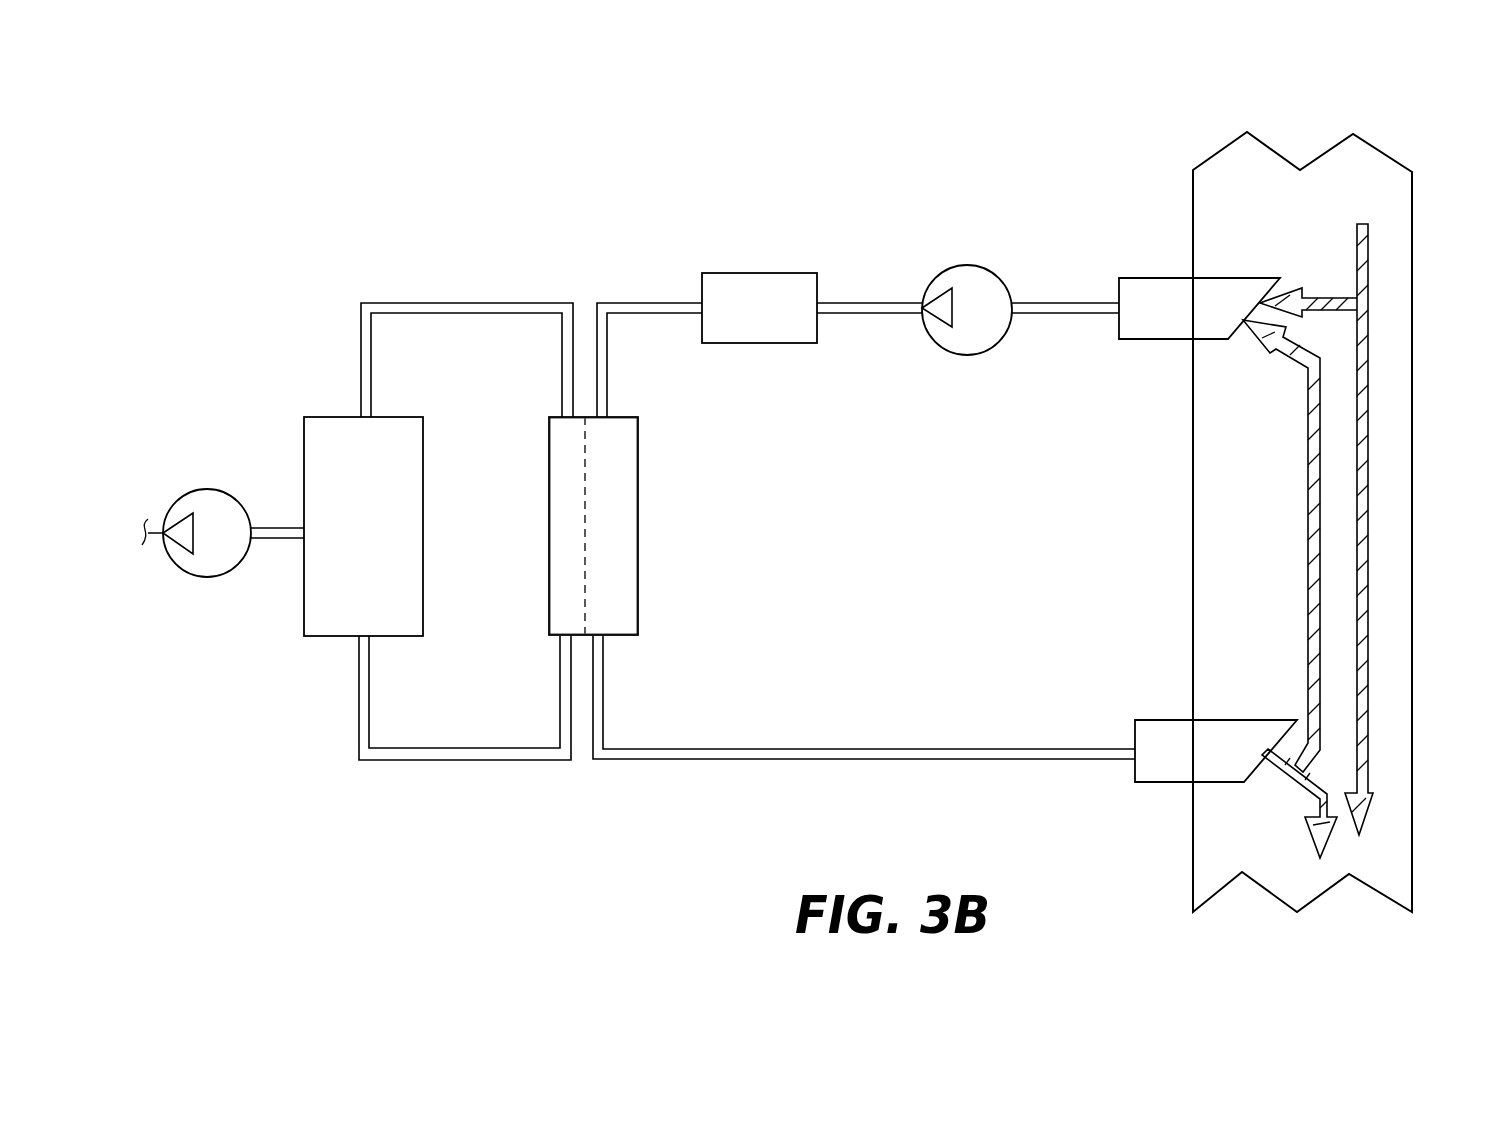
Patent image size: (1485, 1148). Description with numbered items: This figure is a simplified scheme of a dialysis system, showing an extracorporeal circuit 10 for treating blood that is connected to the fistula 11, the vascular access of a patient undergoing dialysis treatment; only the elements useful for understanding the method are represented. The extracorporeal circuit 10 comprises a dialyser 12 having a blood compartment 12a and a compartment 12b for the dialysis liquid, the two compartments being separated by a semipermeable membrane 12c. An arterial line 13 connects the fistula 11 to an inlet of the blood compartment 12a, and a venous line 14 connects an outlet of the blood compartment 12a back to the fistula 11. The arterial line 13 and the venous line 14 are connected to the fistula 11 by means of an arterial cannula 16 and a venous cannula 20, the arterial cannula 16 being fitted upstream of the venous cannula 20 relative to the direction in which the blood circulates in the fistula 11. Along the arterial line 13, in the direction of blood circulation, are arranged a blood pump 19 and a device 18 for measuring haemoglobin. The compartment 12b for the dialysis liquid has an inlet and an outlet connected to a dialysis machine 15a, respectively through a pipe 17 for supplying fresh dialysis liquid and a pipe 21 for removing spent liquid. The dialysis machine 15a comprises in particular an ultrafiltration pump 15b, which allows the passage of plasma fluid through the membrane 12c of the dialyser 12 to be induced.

The extracorporeal circuit 10 is at (857, 259).
The fistula 11 is at (1410, 215).
The dialyser 12 is at (593, 523).
The blood compartment 12a is at (627, 560).
The compartment for the dialysis liquid 12b is at (557, 582).
The semipermeable membrane 12c is at (587, 497).
The arterial line 13 is at (648, 317).
The venous line 14 is at (855, 753).
The dialysis machine 15a is at (313, 437).
The ultrafiltration pump 15b is at (208, 572).
The arterial cannula 16 is at (1152, 333).
The pipe for supplying fresh dialysis liquid 17 is at (467, 305).
The device for measuring haemoglobin 18 is at (757, 280).
The blood pump 19 is at (967, 275).
The venous cannula 20 is at (1165, 728).
The pipe for removing spent liquid 21 is at (468, 757).